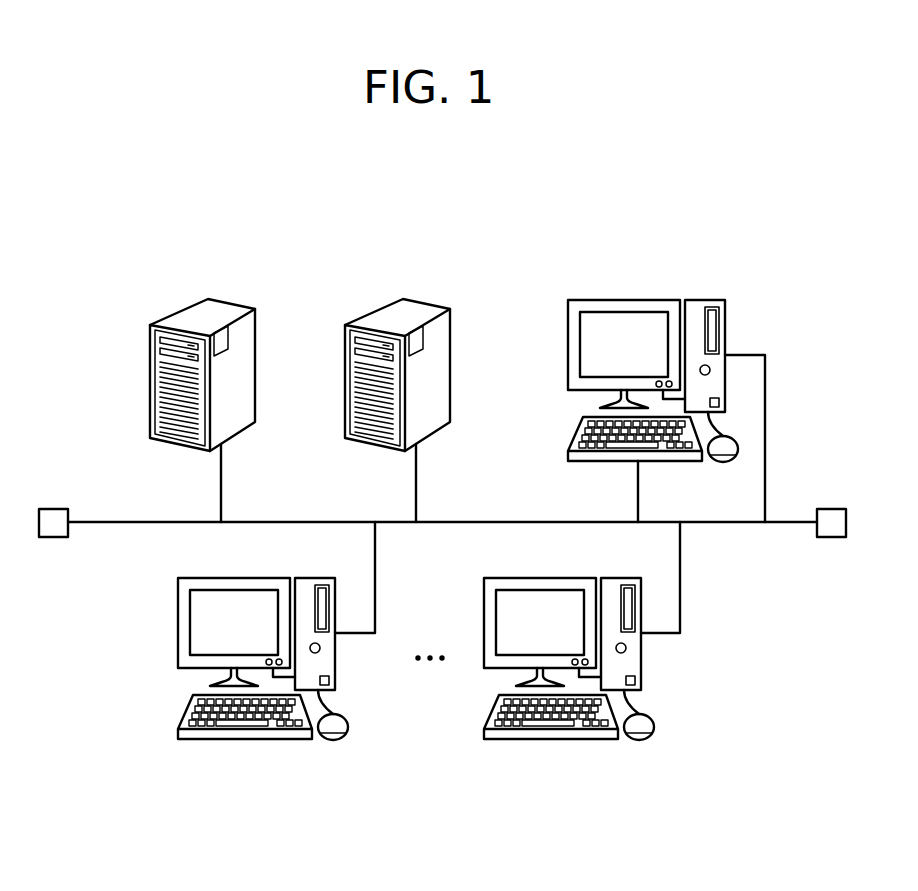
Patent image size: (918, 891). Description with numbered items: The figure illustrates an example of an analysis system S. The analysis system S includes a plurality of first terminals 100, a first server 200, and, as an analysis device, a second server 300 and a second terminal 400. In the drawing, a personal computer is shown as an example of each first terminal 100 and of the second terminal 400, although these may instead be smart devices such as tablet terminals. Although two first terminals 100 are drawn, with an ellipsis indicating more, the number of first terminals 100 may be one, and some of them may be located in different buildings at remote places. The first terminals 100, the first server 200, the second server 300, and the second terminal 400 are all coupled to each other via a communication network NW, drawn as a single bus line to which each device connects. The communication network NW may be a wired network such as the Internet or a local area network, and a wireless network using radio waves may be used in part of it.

The first terminal 100 is at (282, 772).
The first server 200 is at (228, 303).
The second server 300 is at (409, 396).
The second terminal 400 is at (652, 272).
The communication network NW is at (483, 521).
The analysis system S is at (69, 220).